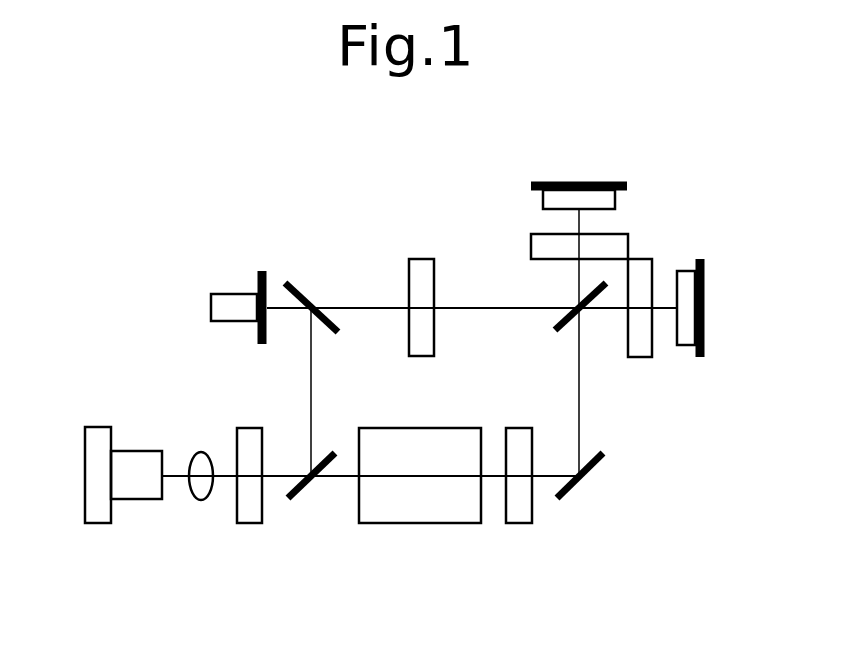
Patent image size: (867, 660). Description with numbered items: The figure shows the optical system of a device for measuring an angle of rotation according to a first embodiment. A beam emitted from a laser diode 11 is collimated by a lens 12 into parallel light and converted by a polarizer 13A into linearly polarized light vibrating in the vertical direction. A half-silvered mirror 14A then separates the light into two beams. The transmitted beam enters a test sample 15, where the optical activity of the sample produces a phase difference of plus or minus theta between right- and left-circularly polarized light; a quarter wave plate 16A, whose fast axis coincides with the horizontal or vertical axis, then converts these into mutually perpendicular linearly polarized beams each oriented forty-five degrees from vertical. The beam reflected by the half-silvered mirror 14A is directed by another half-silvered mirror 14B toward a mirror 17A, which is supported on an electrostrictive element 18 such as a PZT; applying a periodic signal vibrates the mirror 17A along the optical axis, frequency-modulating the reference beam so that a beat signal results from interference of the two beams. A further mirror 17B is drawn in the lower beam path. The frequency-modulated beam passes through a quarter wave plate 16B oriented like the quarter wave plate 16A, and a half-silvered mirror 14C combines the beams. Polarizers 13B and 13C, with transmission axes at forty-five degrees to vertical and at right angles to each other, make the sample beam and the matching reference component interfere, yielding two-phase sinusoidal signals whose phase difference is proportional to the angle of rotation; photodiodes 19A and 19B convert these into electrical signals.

The laser diode 11 is at (98, 523).
The lens 12 is at (188, 500).
The polarizer 13A is at (245, 523).
The half-silvered mirror 14A is at (305, 492).
The test sample 15 is at (413, 523).
The quarter wave plate 16A is at (518, 523).
The mirror 17B is at (575, 485).
The electrostrictive element 18 is at (227, 294).
The mirror 17A is at (262, 270).
The half-silvered mirror 14B is at (305, 285).
The quarter wave plate 16B is at (424, 259).
The photodiode 19A is at (580, 181).
The polarizer 13B is at (612, 234).
The polarizer 13C is at (652, 280).
The half-silvered mirror 14C is at (570, 325).
The photodiode 19B is at (705, 335).